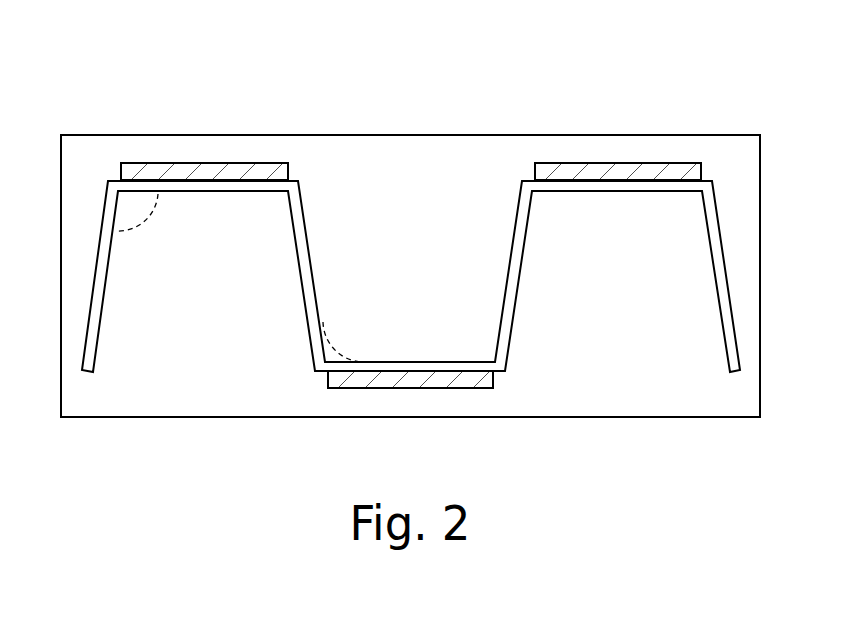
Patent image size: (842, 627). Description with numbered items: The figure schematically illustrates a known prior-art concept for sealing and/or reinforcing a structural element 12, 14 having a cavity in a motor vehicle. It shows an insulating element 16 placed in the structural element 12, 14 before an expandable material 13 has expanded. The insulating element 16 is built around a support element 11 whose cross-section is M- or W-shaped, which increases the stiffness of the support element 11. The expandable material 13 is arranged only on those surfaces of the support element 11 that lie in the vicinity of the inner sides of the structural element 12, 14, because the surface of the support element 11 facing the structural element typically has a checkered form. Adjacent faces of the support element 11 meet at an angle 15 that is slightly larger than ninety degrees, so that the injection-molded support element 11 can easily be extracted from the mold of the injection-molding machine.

The support element 11 is at (515, 272).
The structural element 12 is at (410, 224).
The expandable material 13 is at (208, 170).
The structural element 14 is at (410, 135).
The angle 15 is at (137, 212).
The insulating element 16 is at (557, 163).